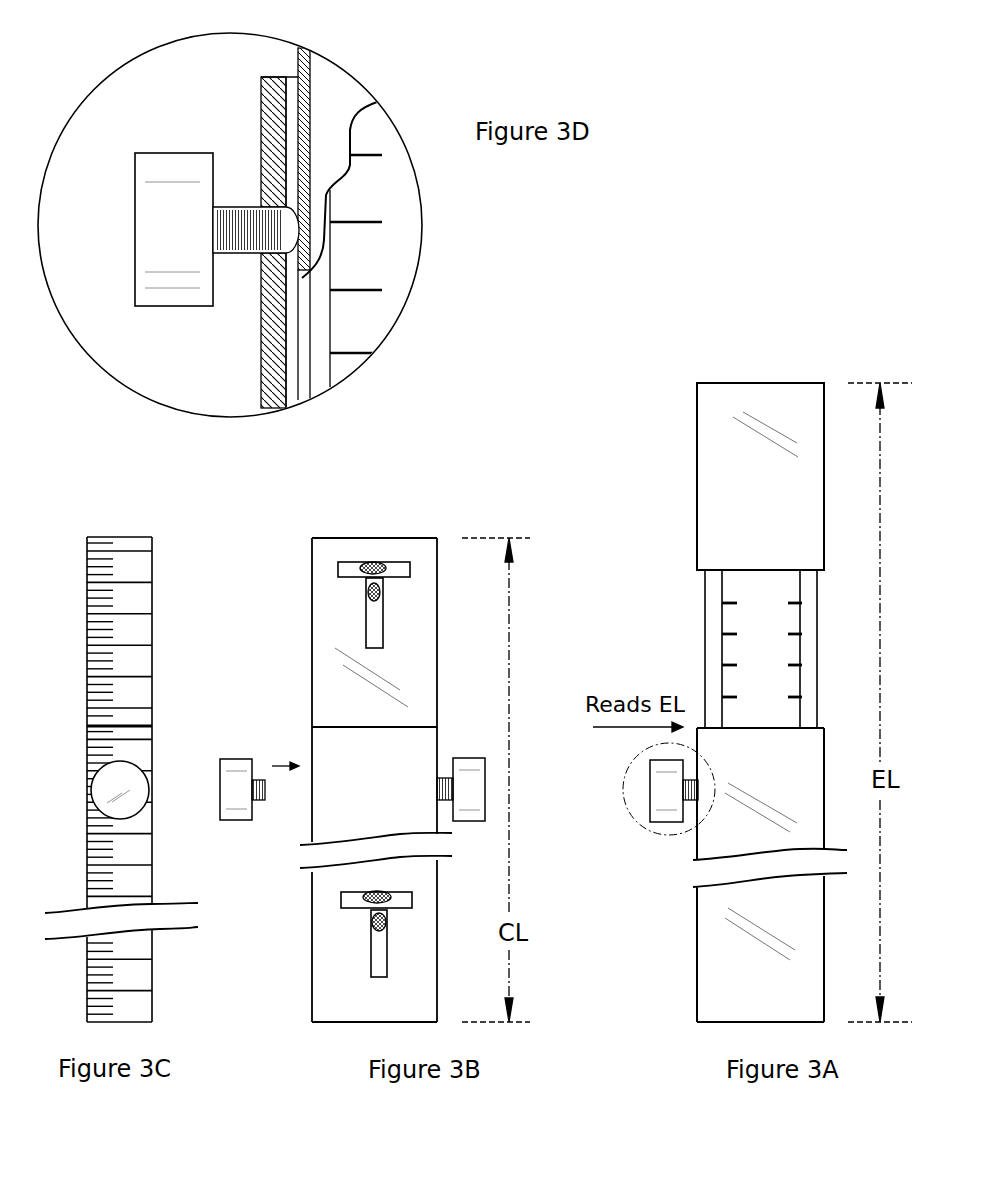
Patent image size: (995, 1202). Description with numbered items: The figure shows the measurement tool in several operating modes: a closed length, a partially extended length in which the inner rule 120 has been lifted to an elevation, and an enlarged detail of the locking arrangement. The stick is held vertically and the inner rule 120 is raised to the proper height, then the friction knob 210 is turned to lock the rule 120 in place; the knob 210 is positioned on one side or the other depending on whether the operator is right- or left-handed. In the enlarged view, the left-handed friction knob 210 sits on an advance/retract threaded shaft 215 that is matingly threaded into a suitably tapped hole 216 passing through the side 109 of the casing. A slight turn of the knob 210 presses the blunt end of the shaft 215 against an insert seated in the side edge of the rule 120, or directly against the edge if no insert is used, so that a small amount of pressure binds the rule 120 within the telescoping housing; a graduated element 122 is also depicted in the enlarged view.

In FIG. 3D, the side of casing 109 is at (275, 410).
In FIG. 3D, the measuring tape strip 122 is at (310, 88).
In FIG. 3D, the friction knob 210 is at (135, 270).
In FIG. 3C, the friction knob 210 is at (146, 790).
In FIG. 3B, the friction knob 210 is at (461, 789).
In FIG. 3A, the friction knob 210 is at (668, 793).
In FIG. 3D, the advance/retract threaded shaft 215 is at (252, 207).
In FIG. 3D, the tapped hole 216 is at (258, 262).
In FIG. 3A, the inner rule 120 is at (712, 662).